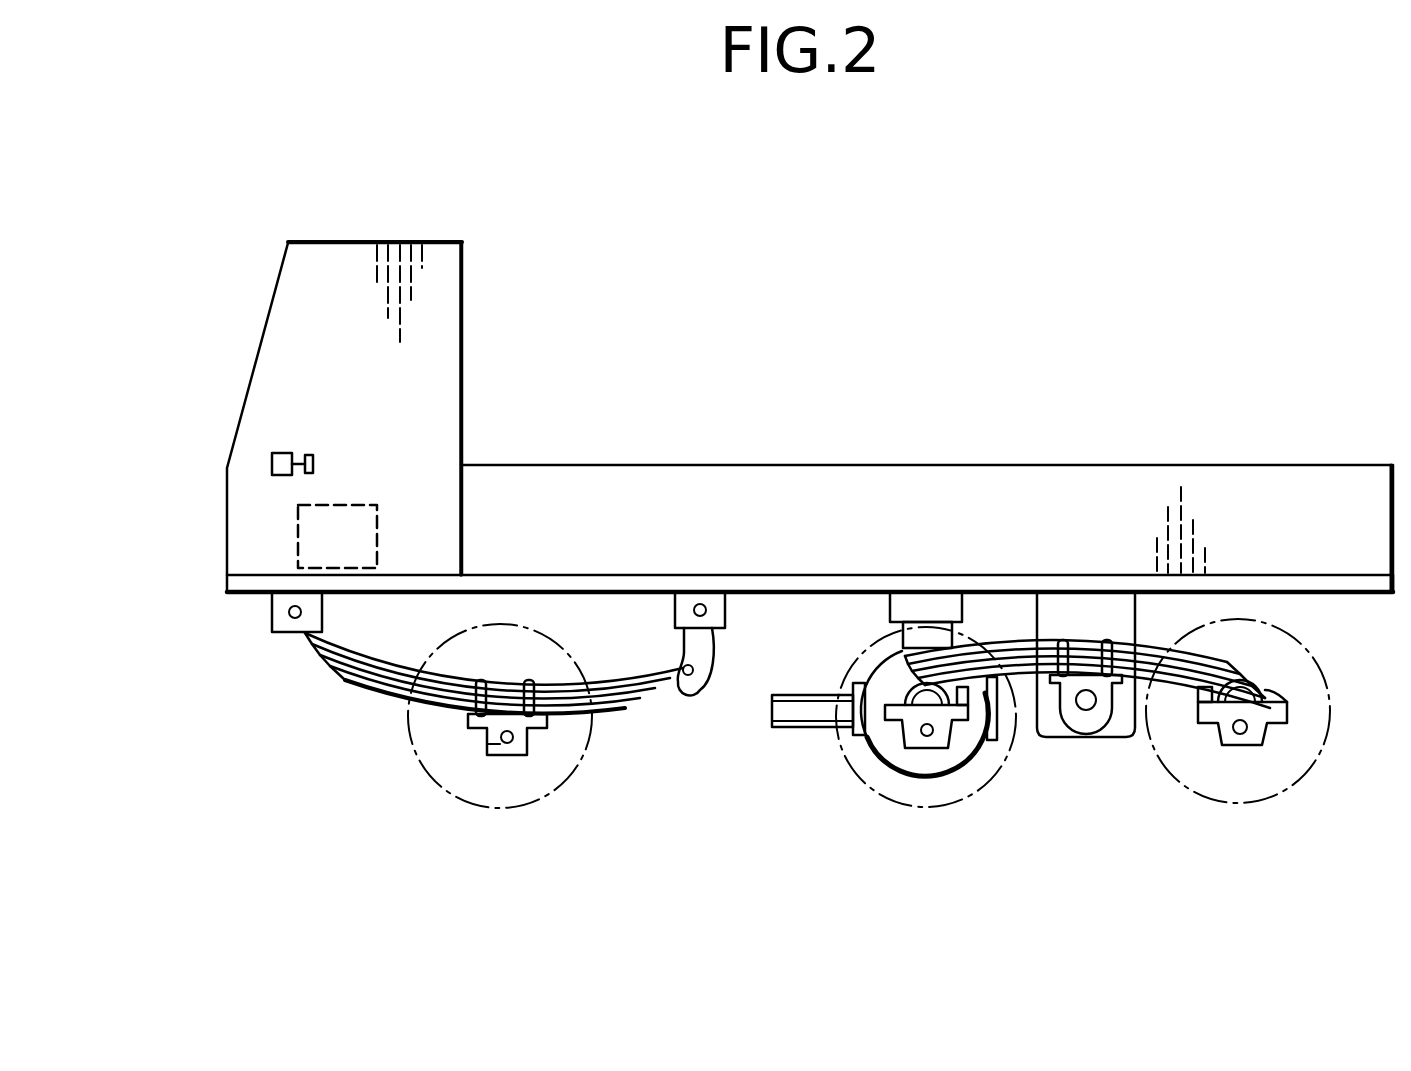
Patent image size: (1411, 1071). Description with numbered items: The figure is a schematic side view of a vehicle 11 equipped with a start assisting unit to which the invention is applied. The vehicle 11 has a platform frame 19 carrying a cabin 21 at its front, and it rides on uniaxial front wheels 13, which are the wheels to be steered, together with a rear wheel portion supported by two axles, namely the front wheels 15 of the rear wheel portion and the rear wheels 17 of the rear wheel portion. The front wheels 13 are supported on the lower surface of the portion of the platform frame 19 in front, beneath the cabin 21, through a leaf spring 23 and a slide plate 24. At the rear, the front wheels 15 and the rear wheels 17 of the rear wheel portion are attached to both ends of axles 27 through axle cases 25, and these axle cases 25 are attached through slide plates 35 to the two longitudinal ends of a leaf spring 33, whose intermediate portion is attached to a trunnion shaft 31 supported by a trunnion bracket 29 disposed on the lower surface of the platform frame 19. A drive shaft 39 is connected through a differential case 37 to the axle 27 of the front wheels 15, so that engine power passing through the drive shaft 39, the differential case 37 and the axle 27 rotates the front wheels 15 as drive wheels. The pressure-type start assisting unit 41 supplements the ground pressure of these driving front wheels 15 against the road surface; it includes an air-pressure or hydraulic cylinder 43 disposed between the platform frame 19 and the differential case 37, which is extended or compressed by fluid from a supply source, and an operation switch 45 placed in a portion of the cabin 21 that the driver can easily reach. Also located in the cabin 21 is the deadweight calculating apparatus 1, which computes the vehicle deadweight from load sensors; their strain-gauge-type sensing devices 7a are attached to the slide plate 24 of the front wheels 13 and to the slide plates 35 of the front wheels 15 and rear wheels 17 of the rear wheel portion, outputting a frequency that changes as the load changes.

The vehicle 11 is at (222, 332).
The cabin 21 is at (322, 243).
The platform frame 19 is at (230, 585).
The operation switch 45 is at (272, 462).
The deadweight calculating apparatus 1 is at (349, 502).
The front wheels 13 is at (500, 809).
The leaf spring 23 is at (366, 697).
The slide plate 24 is at (527, 740).
The strain-gauge-type sensing device 7a is at (487, 753).
The pressure-type start assisting unit 41 is at (927, 591).
The cylinder 43 is at (962, 607).
The differential case 37 is at (888, 678).
The drive shaft 39 is at (770, 713).
The slide plates 35 is at (858, 752).
The front wheels of the rear wheel portion 15 is at (870, 791).
The axle cases 25 is at (913, 748).
The axles 27 is at (930, 738).
The trunnion bracket 29 is at (1120, 728).
The trunnion shaft 31 is at (1088, 708).
The leaf spring 33 is at (1232, 660).
The rear wheels of the rear wheel portion 17 is at (1289, 790).